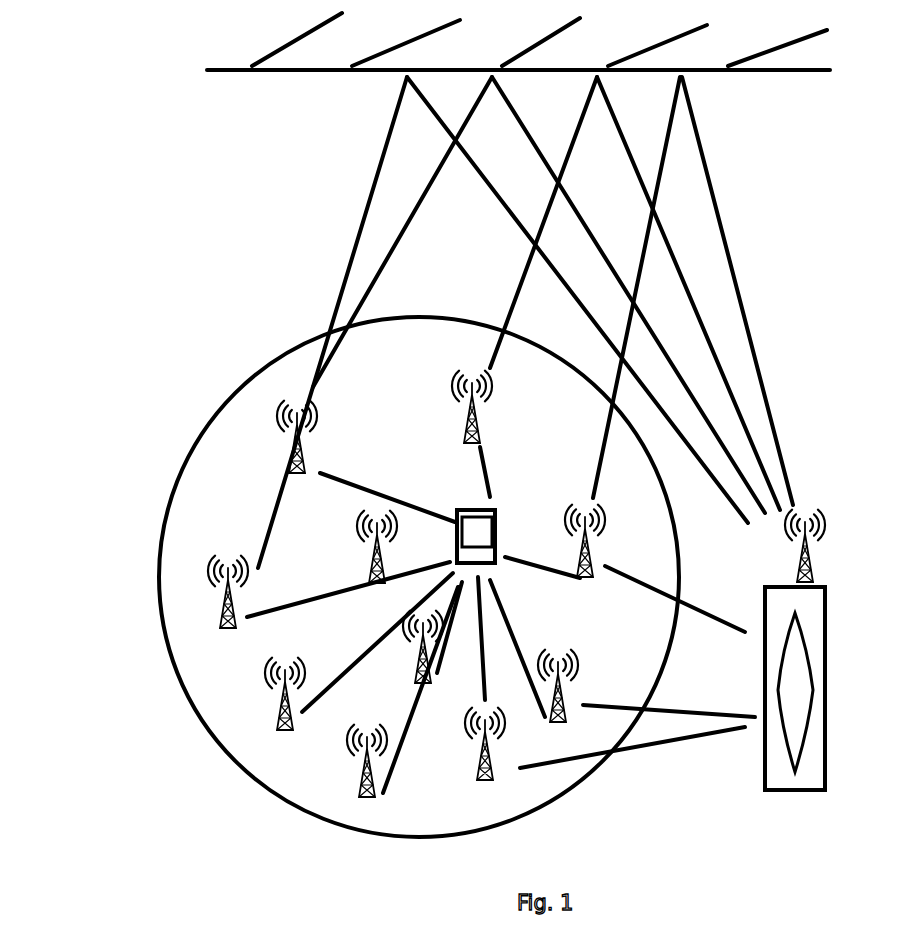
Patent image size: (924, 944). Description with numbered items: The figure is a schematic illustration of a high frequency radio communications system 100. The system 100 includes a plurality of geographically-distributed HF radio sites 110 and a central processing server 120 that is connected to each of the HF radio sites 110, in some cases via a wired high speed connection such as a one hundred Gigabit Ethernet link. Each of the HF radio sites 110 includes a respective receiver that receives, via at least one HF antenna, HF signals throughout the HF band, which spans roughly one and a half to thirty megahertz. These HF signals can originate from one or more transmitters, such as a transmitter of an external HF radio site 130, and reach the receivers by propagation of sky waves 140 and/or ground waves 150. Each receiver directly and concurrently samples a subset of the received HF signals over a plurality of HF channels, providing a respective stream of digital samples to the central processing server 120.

The HF radio communications system 100 is at (187, 435).
The HF radio sites 110 is at (346, 776).
The central processing server 120 is at (458, 496).
The external HF radio site 130 is at (841, 525).
The sky waves 140 is at (752, 234).
The ground waves 150 is at (727, 644).